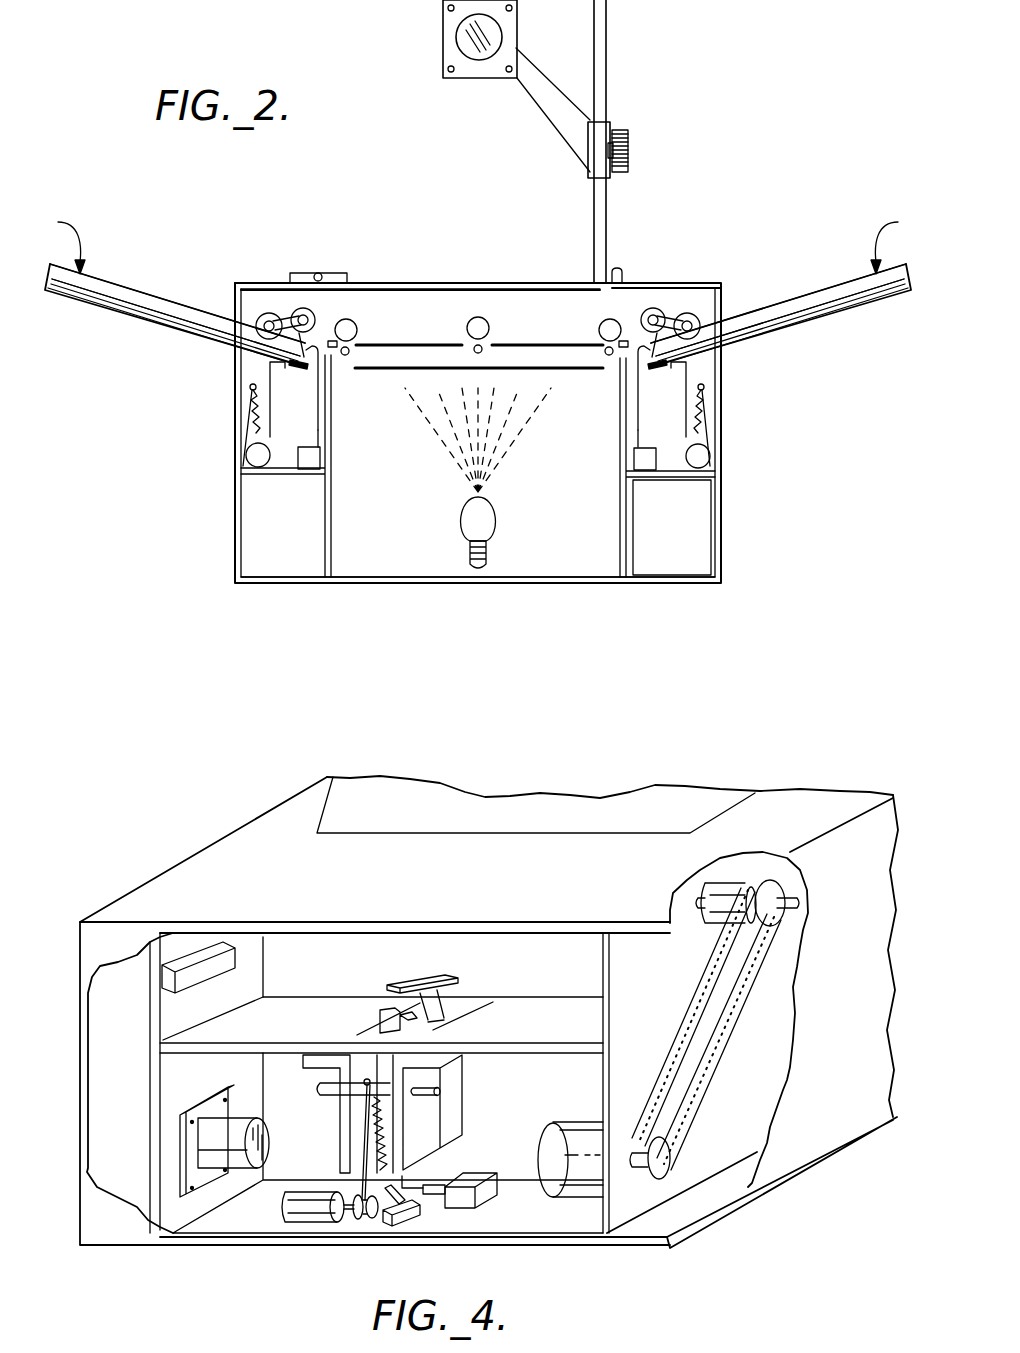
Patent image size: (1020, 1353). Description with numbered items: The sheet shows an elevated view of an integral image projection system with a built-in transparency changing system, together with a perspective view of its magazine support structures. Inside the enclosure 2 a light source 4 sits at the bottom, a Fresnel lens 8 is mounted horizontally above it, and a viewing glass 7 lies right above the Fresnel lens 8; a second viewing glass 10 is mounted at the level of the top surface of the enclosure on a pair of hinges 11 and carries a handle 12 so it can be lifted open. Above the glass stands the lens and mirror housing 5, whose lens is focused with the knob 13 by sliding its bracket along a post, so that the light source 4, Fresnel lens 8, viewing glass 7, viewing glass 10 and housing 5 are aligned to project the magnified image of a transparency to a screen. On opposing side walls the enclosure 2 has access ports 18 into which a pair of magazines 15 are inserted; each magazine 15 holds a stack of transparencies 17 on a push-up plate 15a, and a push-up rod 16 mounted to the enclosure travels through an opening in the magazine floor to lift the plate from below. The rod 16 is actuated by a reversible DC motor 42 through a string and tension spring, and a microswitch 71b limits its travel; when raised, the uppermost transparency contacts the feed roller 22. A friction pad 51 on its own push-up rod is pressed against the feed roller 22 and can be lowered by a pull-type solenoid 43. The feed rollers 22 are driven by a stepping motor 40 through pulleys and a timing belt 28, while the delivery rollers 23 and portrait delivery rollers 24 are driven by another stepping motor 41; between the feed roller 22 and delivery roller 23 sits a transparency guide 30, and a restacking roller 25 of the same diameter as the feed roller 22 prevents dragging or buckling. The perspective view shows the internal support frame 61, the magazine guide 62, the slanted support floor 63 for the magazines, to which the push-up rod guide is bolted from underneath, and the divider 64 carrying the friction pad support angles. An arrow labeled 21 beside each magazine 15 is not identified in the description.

In FIG. 2, the enclosure 2 is at (722, 540).
In FIG. 2, the light source 4 is at (462, 512).
In FIG. 2, the lens and mirror housing 5 is at (443, 22).
In FIG. 2, the viewing glass 7 is at (522, 342).
In FIG. 2, the Fresnel lens 8 is at (355, 372).
In FIG. 2, the viewing glass 10 is at (557, 282).
In FIG. 2, the hinge 11 is at (318, 272).
In FIG. 2, the handle 12 is at (615, 268).
In FIG. 2, the focusing knob 13 is at (625, 130).
In FIG. 2, the magazine 15 is at (180, 333).
In FIG. 2, the push-up plate 15a is at (122, 310).
In FIG. 2, the push-up rod 16 is at (694, 402).
In FIG. 4, the push-up rod 16 is at (377, 1024).
In FIG. 2, the stack of transparencies 17 is at (152, 307).
In FIG. 2, the access port 18 is at (230, 353).
In FIG. 4, the access port 18 is at (248, 955).
In FIG. 2, the flap rotation direction 21 is at (465, 242).
In FIG. 2, the feed roller 22 is at (272, 312).
In FIG. 2, the delivery roller 23 is at (353, 323).
In FIG. 2, the portrait delivery roller 24 is at (470, 325).
In FIG. 2, the restacking roller 25 is at (258, 302).
In FIG. 4, the timing belt 28 is at (717, 1040).
In FIG. 2, the guide 30 is at (332, 330).
In FIG. 4, the stepping motor for feed rollers 40 is at (577, 1120).
In FIG. 4, the stepping motor for delivery rollers 41 is at (256, 1162).
In FIG. 4, the DC motor for push-up rod 42 is at (321, 1225).
In FIG. 4, the solenoid for friction pad 43 is at (475, 1172).
In FIG. 4, the friction pad 51 is at (400, 977).
In FIG. 4, the internal support frame 61 is at (157, 1080).
In FIG. 4, the magazine guide 62 is at (204, 967).
In FIG. 4, the slanted support floor for magazines 63 is at (205, 1036).
In FIG. 2, the divider 64 is at (652, 480).
In FIG. 4, the divider 64 is at (553, 968).
In FIG. 4, the microswitch 71b is at (403, 1222).